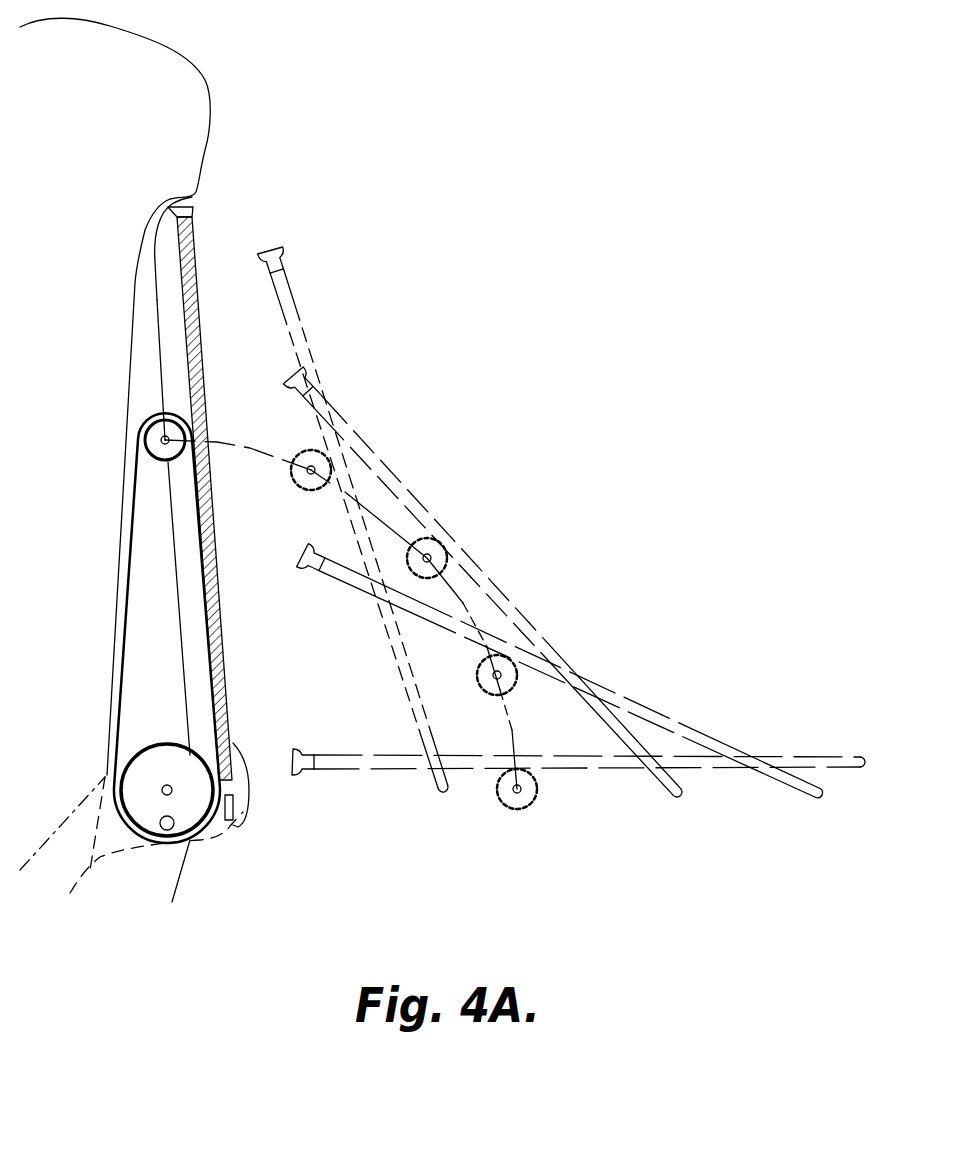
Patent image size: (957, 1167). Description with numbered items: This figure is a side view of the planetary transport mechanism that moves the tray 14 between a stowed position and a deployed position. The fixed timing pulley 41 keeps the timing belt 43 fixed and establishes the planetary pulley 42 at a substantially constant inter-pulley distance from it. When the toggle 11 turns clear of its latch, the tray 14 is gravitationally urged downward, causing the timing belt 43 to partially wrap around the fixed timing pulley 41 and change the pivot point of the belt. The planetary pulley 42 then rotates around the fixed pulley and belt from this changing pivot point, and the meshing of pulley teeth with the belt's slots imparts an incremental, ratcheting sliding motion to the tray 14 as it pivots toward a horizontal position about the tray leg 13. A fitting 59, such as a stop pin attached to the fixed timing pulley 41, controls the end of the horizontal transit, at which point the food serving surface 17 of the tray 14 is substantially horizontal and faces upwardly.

The toggle 11 is at (248, 812).
The tray leg 13 is at (46, 826).
The tray 14 is at (193, 209).
The food serving surface 17 is at (205, 345).
The fixed timing pulley 41 is at (160, 757).
The planetary pulley 42 is at (165, 440).
The timing belt 43 is at (129, 580).
The fitting 59 is at (164, 832).